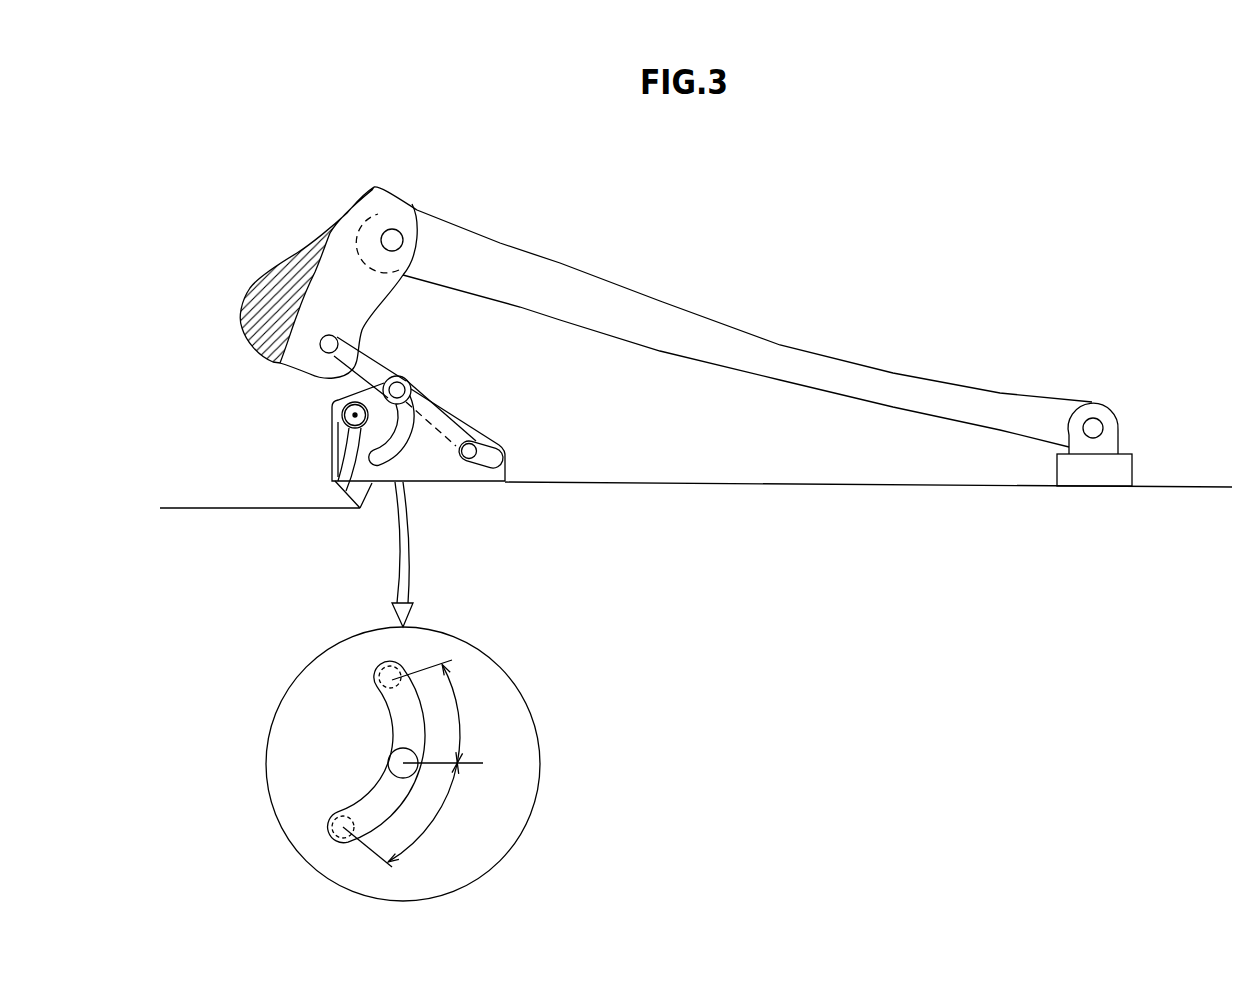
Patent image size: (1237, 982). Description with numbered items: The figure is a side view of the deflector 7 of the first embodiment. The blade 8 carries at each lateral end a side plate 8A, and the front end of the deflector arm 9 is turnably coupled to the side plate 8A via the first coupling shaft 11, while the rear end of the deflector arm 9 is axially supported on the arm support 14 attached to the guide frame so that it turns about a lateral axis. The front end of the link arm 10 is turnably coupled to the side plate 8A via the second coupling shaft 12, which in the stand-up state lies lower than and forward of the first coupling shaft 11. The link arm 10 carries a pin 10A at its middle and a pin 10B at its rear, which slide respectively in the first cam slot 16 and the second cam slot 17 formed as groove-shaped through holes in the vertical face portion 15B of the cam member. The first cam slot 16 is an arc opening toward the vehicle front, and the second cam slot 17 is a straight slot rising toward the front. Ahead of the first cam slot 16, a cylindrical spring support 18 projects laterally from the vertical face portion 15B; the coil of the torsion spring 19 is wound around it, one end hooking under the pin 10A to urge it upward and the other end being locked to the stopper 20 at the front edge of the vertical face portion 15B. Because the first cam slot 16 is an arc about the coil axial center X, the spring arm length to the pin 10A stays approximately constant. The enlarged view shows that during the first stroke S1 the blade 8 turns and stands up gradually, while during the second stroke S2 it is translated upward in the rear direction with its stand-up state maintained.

The deflector 7 is at (516, 198).
The blade 8 is at (317, 240).
The side plate 8A is at (342, 277).
The deflector arm 9 is at (665, 307).
The link arm 10 is at (370, 367).
The pin 10A is at (408, 382).
The pin 10B is at (470, 446).
The first coupling shaft 11 is at (393, 228).
The second coupling shaft 12 is at (293, 380).
The arm support 14 is at (1132, 461).
The vertical face portion 15B is at (475, 470).
The first cam slot 16 is at (414, 437).
The second cam slot 17 is at (507, 452).
The spring support 18 is at (332, 457).
The torsion spring 19 is at (345, 482).
The stopper 20 is at (335, 443).
The coil axial center X is at (343, 417).
The first stroke S1 is at (408, 815).
The second stroke S2 is at (446, 711).